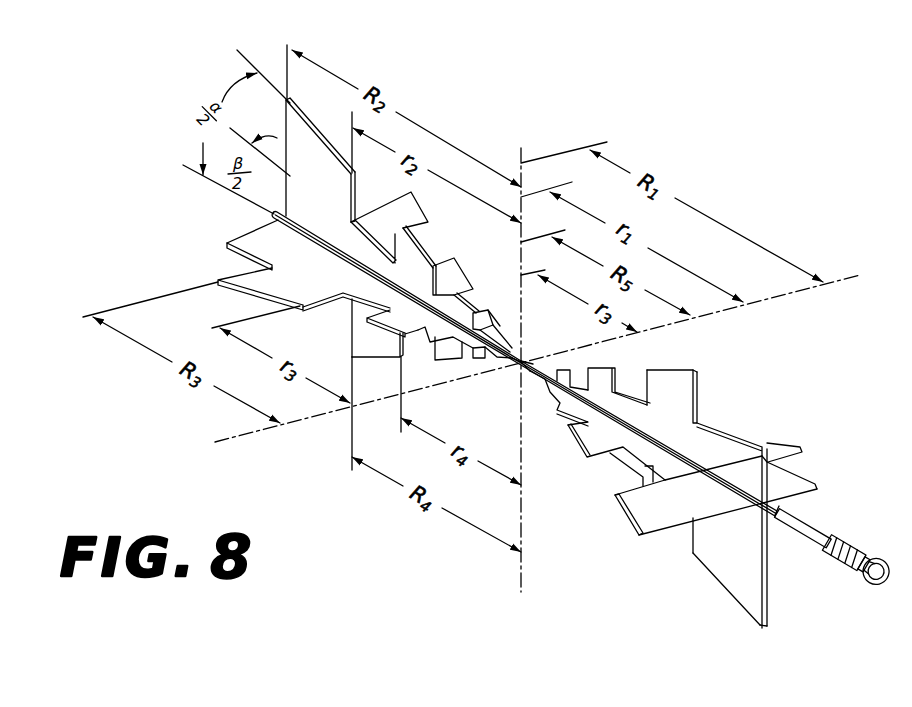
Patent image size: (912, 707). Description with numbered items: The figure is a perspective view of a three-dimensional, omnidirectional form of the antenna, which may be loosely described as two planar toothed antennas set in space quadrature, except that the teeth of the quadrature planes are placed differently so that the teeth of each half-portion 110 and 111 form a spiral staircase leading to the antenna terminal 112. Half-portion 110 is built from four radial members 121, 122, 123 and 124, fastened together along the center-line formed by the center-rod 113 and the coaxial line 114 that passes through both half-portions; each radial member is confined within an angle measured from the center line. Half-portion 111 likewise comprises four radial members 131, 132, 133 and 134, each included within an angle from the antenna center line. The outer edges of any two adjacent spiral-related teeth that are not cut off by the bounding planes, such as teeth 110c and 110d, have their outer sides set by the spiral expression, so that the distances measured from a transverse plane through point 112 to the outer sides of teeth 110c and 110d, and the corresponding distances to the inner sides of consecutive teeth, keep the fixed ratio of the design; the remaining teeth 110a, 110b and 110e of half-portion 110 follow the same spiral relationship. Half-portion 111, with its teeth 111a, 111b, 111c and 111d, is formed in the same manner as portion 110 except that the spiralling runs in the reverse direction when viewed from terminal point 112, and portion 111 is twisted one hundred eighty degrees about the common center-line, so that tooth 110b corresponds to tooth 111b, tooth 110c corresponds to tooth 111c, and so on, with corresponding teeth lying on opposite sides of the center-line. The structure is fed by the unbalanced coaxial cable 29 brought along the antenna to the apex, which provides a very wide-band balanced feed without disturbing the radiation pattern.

The coaxial cable 29 is at (827, 530).
The antenna half-portion 110 is at (238, 205).
The tooth of half-portion 110 110a is at (416, 226).
The tooth of half-portion 110 110b is at (340, 192).
The tooth of half-portion 110 110c is at (320, 289).
The tooth of half-portion 110 110d is at (400, 353).
The tooth of half-portion 110 110e is at (628, 448).
The antenna half-portion 111 is at (662, 572).
The tooth of half-portion 111 111a is at (696, 515).
The tooth of half-portion 111 111b is at (754, 557).
The tooth of half-portion 111 111c is at (778, 446).
The tooth of half-portion 111 111d is at (699, 403).
The antenna terminal 112 is at (515, 367).
The center-rod 113 is at (308, 237).
The coaxial line 114 is at (773, 517).
The radial member 121 is at (471, 285).
The radial member 122 is at (334, 128).
The radial member 123 is at (237, 259).
The radial member 124 is at (350, 331).
The radial member 131 is at (614, 515).
The radial member 132 is at (724, 595).
The radial member 133 is at (818, 462).
The radial member 134 is at (706, 374).